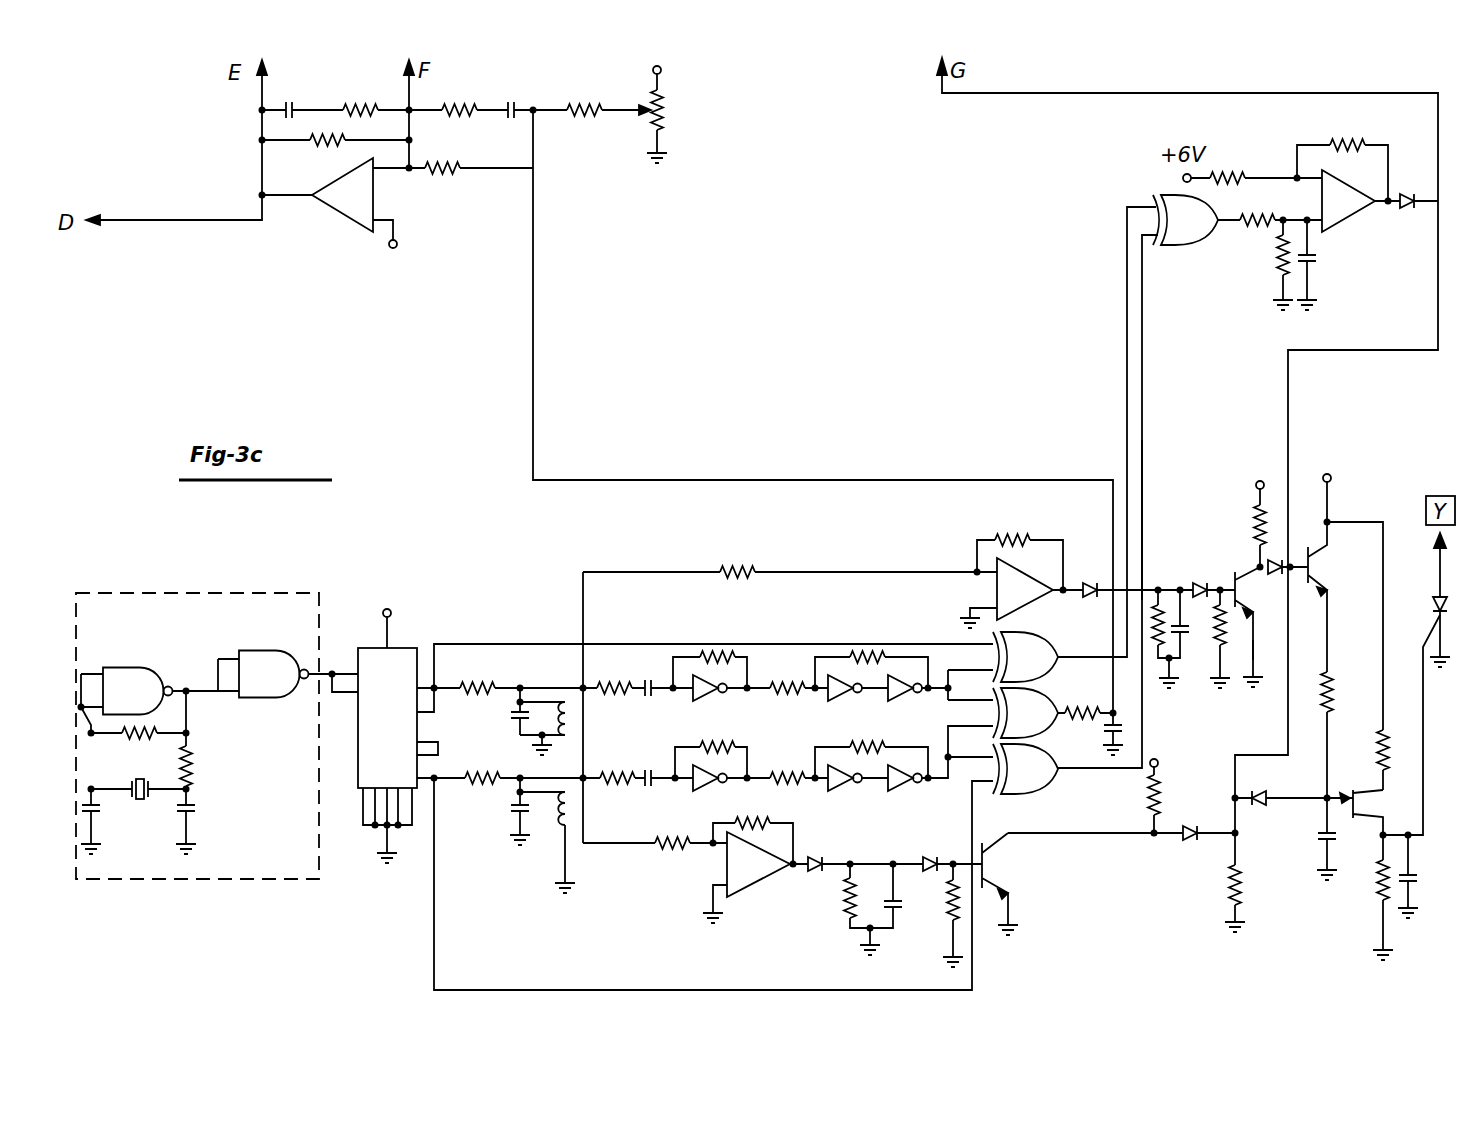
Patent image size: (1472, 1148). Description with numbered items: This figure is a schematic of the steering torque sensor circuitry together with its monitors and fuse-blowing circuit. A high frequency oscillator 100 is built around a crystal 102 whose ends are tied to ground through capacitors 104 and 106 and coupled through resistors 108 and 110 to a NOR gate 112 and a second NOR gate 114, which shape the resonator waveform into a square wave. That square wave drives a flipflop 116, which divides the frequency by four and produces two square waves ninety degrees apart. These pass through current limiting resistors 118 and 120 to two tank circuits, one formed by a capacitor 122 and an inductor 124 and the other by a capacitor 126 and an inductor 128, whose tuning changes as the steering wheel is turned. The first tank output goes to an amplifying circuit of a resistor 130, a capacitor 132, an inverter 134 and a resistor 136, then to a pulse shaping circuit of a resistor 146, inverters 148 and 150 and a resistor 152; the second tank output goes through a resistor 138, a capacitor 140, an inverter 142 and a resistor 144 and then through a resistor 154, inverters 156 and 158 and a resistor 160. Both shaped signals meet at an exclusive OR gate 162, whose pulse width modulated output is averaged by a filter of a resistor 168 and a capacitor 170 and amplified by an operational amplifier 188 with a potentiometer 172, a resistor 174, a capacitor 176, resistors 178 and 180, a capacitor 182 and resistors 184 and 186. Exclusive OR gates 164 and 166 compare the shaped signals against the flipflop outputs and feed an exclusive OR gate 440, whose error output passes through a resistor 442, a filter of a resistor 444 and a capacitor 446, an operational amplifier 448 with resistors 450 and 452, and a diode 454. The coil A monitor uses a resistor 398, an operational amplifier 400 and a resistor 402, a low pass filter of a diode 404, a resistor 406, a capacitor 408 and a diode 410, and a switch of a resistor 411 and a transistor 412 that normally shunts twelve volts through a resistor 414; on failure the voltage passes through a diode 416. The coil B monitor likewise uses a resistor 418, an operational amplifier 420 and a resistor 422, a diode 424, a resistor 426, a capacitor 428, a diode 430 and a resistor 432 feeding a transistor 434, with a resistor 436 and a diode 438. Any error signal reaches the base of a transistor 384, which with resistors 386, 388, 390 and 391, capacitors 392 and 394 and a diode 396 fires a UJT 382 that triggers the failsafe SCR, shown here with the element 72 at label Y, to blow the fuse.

The light emitting diode 72 is at (1433, 610).
The high frequency oscillator 100 is at (196, 593).
The crystal 102 is at (138, 778).
The capacitor 104 is at (196, 806).
The capacitor 106 is at (102, 808).
The resistor 108 is at (193, 766).
The resistor 110 is at (165, 726).
The NOR gate 112 is at (126, 668).
The NOR gate 114 is at (298, 632).
The flipflop 116 is at (410, 648).
The current limiting resistor 118 is at (484, 686).
The current limiting resistor 120 is at (498, 752).
The capacitor 122 is at (515, 715).
The inductor 124 is at (572, 716).
The capacitor 126 is at (514, 806).
The inductor 128 is at (556, 820).
The resistor 130 is at (632, 668).
The capacitor 132 is at (647, 700).
The inverter 134 is at (712, 702).
The resistor 136 is at (743, 656).
The resistor 138 is at (595, 775).
The capacitor 140 is at (644, 786).
The inverter 142 is at (710, 782).
The resistor 144 is at (735, 744).
The resistor 146 is at (776, 682).
The inverter 148 is at (834, 700).
The inverter 150 is at (898, 696).
The resistor 152 is at (888, 626).
The resistor 154 is at (769, 774).
The inverter 156 is at (840, 786).
The inverter 158 is at (894, 790).
The resistor 160 is at (854, 746).
The exclusive OR gate 162 is at (1050, 698).
The exclusive OR gate 164 is at (1038, 646).
The exclusive OR gate 166 is at (1050, 782).
The resistor 168 is at (1094, 718).
The capacitor 170 is at (1143, 746).
The potentiometer 172 is at (666, 112).
The resistor 174 is at (582, 116).
The capacitor 176 is at (515, 105).
The resistor 178 is at (452, 106).
The resistor 180 is at (356, 106).
The capacitor 182 is at (290, 106).
The resistor 184 is at (328, 138).
The resistor 186 is at (440, 166).
The operational amplifier 188 is at (343, 228).
The UJT 382 is at (1368, 804).
The transistor 384 is at (1322, 576).
The resistor 386 is at (1330, 684).
The resistor 388 is at (1380, 742).
The resistor 390 is at (1377, 883).
The resistor 391 is at (1242, 878).
The capacitor 392 is at (1324, 836).
The capacitor 394 is at (1414, 866).
The diode 396 is at (1260, 796).
The current limiting resistor 398 is at (740, 568).
The operational amplifier 400 is at (995, 592).
The resistor 402 is at (1030, 522).
The diode 404 is at (1088, 582).
The resistor 406 is at (1166, 613).
The capacitor 408 is at (1225, 632).
The diode 410 is at (1194, 586).
The resistor 411 is at (1246, 664).
The transistor 412 is at (1246, 590).
The resistor 414 is at (1256, 524).
The diode 416 is at (1275, 558).
The resistor 418 is at (670, 850).
The operational amplifier 420 is at (756, 883).
The resistor 422 is at (773, 822).
The diode 424 is at (828, 859).
The resistor 426 is at (845, 904).
The capacitor 428 is at (910, 904).
The diode 430 is at (952, 840).
The resistor 432 is at (968, 928).
The transistor 434 is at (993, 864).
The resistor 436 is at (1161, 794).
The diode 438 is at (1185, 842).
The exclusive OR gate 440 is at (1173, 243).
The resistor 442 is at (1275, 205).
The resistor 444 is at (1275, 260).
The capacitor 446 is at (1315, 262).
The operational amplifier 448 is at (1350, 220).
The resistor 450 is at (1229, 175).
The resistor 452 is at (1354, 144).
The diode 454 is at (1406, 194).